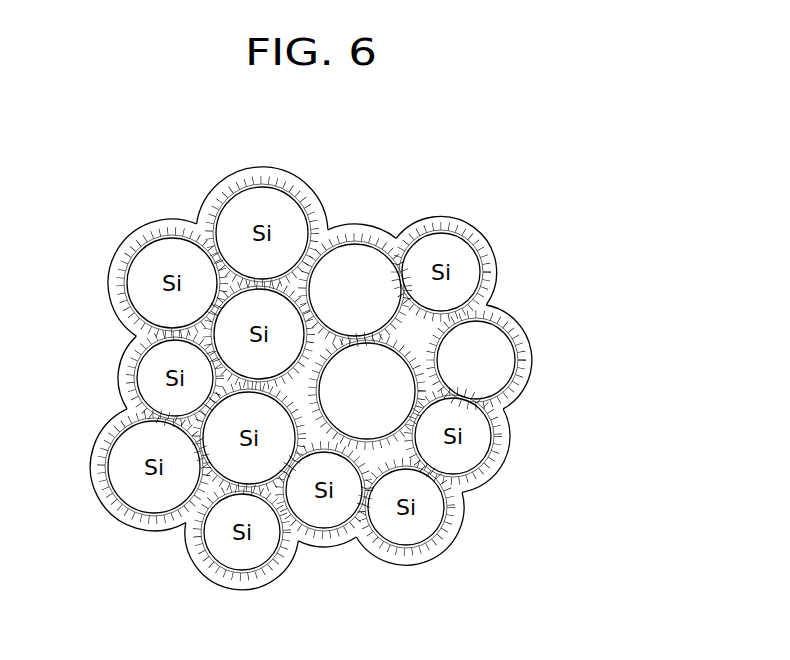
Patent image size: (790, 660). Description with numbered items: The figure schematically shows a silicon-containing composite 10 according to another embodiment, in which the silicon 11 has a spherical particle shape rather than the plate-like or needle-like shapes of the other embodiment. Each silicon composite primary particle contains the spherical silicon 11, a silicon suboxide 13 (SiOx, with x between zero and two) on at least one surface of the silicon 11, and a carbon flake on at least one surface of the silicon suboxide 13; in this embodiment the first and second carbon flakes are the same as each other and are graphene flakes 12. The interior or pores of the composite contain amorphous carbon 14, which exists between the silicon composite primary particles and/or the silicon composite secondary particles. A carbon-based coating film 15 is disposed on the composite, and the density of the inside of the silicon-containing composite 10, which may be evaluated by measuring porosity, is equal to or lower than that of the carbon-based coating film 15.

The silicon-containing composite 10 is at (522, 218).
The silicon 11 is at (356, 257).
The graphene flakes 12 is at (505, 323).
The silicon suboxide 13 is at (510, 380).
The amorphous carbon 14 is at (412, 330).
The carbon-based coating film 15 is at (122, 373).